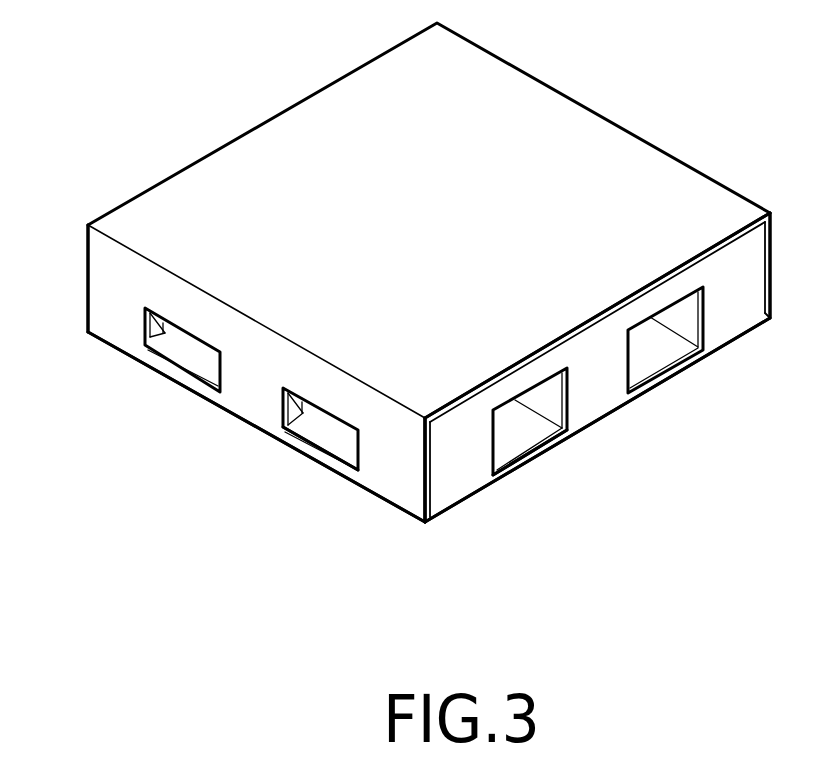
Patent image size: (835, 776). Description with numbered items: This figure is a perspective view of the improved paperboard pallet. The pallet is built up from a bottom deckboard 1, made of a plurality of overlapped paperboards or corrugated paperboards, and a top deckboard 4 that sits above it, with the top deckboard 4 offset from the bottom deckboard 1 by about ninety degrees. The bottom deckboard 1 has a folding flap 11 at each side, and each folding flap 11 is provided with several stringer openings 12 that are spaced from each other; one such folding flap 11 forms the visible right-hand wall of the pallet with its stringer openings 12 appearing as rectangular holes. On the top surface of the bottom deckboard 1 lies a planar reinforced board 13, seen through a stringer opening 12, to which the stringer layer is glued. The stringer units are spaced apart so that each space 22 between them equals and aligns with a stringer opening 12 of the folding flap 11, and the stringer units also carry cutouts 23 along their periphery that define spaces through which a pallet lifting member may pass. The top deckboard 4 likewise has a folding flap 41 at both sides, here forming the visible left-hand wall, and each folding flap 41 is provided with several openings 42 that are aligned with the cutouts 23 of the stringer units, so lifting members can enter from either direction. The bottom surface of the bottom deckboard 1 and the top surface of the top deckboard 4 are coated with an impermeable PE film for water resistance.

The bottom deckboard 1 is at (618, 410).
The top deckboard 4 is at (630, 157).
The folding flap 11 is at (462, 487).
The stringer opening 12 is at (523, 423).
The planar reinforced board 13 is at (500, 445).
The space 22 is at (558, 445).
The cutout 23 is at (337, 432).
The folding flap 41 is at (112, 317).
The opening 42 is at (308, 437).